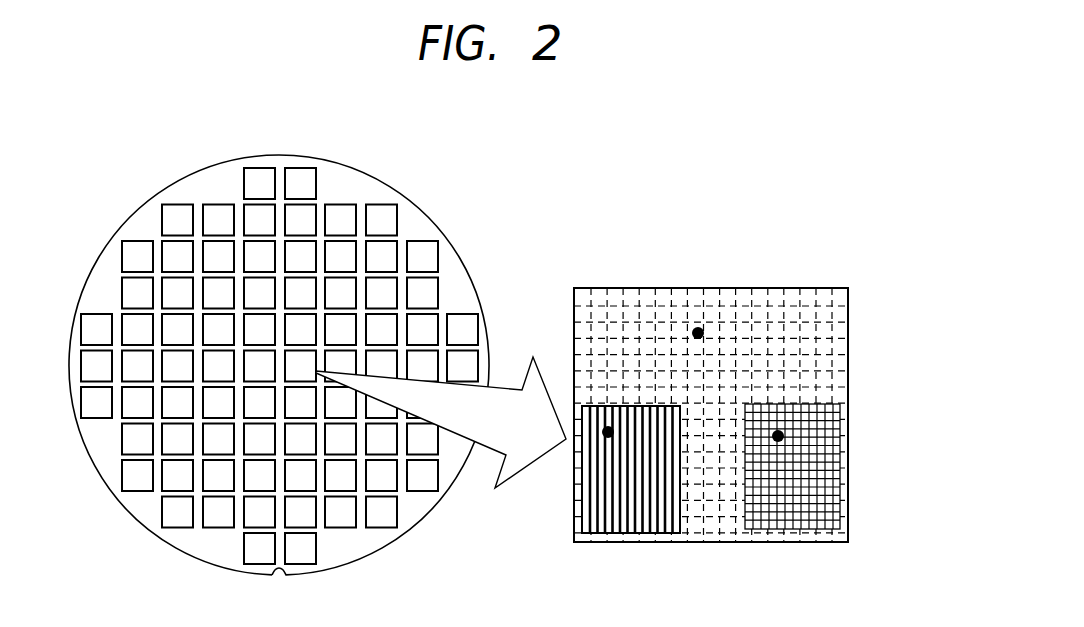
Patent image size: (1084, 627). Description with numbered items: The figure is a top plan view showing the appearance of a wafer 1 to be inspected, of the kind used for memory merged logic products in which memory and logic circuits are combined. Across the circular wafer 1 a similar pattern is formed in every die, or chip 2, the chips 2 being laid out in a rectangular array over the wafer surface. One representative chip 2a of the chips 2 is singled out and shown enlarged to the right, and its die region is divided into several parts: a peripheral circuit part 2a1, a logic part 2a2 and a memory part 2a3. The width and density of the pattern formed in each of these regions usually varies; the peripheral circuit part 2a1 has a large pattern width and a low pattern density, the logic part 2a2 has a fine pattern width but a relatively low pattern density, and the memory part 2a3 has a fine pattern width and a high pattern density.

The wafer 1 is at (430, 215).
The die (chip) 2 is at (317, 181).
The representative chip 2a is at (298, 353).
The peripheral circuit part 2a1 is at (702, 329).
The logic part 2a2 is at (609, 428).
The memory part 2a3 is at (780, 432).